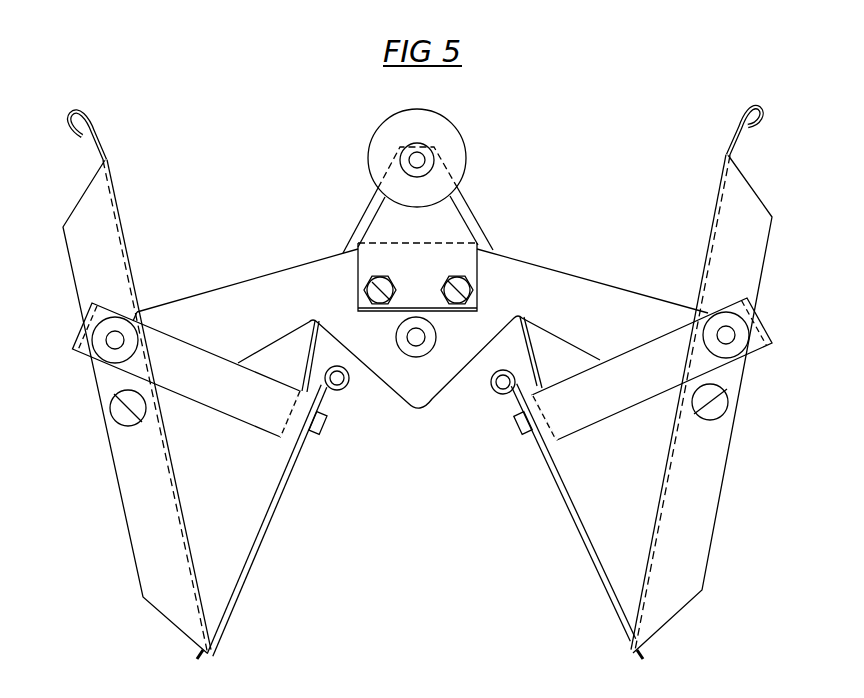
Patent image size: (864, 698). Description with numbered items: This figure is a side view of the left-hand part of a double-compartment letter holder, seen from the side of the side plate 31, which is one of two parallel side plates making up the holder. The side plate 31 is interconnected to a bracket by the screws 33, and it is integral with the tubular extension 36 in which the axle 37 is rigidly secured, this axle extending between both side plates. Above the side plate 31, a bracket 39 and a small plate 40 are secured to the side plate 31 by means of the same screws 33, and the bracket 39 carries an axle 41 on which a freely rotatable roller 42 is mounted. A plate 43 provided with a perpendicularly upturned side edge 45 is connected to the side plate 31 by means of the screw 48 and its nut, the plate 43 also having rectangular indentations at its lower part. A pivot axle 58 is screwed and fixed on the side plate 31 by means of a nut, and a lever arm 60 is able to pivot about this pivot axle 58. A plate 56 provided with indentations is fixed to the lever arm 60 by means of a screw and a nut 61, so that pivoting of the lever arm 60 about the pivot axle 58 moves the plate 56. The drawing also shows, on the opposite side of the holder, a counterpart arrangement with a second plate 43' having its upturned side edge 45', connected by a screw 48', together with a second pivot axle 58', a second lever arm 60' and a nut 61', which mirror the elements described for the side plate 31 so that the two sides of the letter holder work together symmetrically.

The side plate 31 is at (230, 285).
The screws 33 is at (448, 275).
The tubular extension 36 is at (397, 352).
The axle 37 is at (425, 337).
The bracket 39 is at (476, 229).
The small plate 40 is at (397, 308).
The axle 41 is at (421, 163).
The roller 42 is at (462, 132).
The plate 43 is at (696, 378).
The rod with hook 43' is at (140, 380).
The upturned side edge 45 is at (702, 407).
The side plate 45' is at (135, 409).
The screw 48 is at (744, 411).
The screw 48' is at (103, 416).
The plate 56 is at (252, 552).
The pivot axle 58 is at (774, 331).
The pivot 58' is at (79, 338).
The lever arm 60 is at (652, 374).
The arm bar 60' is at (187, 379).
The nut 61 is at (506, 403).
The hook pin 61' is at (343, 400).